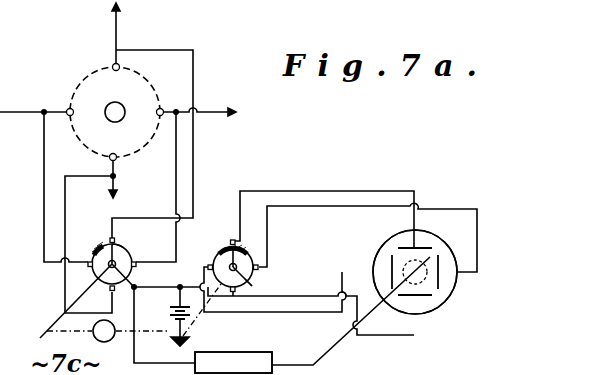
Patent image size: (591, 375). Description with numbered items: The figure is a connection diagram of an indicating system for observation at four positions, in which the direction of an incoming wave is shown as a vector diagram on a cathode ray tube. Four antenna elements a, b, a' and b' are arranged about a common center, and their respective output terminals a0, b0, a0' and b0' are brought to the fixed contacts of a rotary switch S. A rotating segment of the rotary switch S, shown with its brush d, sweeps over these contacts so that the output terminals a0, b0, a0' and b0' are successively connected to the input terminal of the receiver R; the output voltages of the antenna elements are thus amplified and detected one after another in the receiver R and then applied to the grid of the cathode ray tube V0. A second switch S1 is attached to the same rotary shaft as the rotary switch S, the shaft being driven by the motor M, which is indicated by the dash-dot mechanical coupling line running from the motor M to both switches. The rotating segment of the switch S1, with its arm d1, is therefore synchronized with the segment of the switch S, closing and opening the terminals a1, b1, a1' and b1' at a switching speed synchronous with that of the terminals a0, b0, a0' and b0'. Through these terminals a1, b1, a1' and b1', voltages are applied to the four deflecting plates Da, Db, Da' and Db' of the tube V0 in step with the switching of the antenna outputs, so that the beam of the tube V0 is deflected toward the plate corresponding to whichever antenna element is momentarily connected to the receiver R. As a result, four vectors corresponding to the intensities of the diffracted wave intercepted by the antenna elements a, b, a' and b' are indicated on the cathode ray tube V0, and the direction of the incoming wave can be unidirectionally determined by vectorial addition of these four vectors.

The antenna element a is at (121, 62).
The antenna element a' is at (120, 162).
The antenna element b is at (165, 107).
The antenna element b' is at (65, 107).
The output terminal a0 is at (104, 236).
The output terminal a0' is at (102, 295).
The output terminal b0 is at (142, 257).
The output terminal b0' is at (84, 257).
The rotary switch S is at (113, 245).
The brush segment d is at (126, 250).
The terminal a1 is at (225, 238).
The terminal a1' is at (223, 297).
The terminal b1 is at (263, 257).
The terminal b1' is at (204, 259).
The switch S1 is at (239, 248).
The brush arm d1 is at (259, 286).
The motor M is at (104, 331).
The receiver R is at (233, 362).
The cathode ray tube V0 is at (450, 253).
The deflecting plate Da is at (426, 237).
The deflecting plate Da' is at (426, 311).
The deflecting plate Db is at (458, 275).
The deflecting plate Db' is at (372, 271).